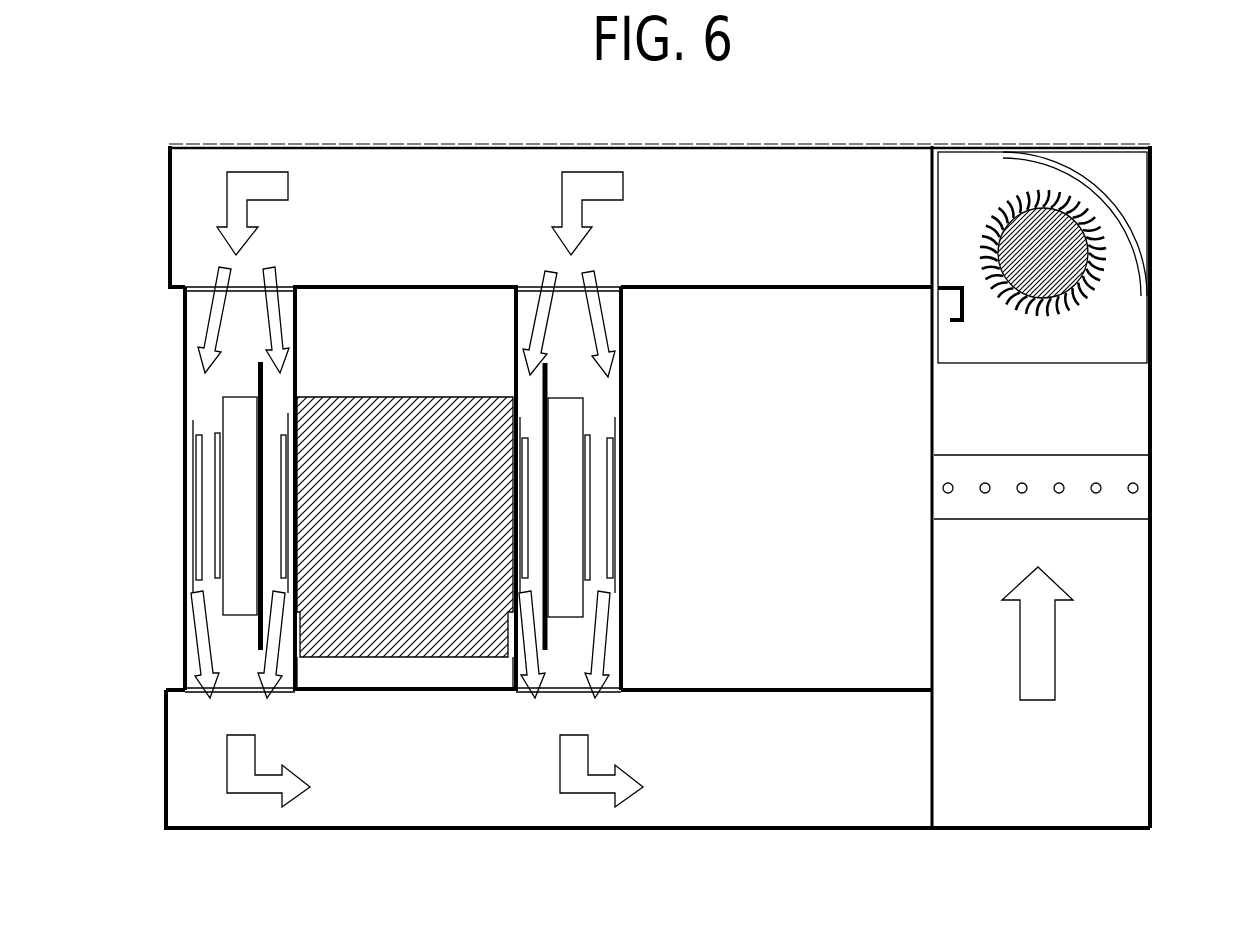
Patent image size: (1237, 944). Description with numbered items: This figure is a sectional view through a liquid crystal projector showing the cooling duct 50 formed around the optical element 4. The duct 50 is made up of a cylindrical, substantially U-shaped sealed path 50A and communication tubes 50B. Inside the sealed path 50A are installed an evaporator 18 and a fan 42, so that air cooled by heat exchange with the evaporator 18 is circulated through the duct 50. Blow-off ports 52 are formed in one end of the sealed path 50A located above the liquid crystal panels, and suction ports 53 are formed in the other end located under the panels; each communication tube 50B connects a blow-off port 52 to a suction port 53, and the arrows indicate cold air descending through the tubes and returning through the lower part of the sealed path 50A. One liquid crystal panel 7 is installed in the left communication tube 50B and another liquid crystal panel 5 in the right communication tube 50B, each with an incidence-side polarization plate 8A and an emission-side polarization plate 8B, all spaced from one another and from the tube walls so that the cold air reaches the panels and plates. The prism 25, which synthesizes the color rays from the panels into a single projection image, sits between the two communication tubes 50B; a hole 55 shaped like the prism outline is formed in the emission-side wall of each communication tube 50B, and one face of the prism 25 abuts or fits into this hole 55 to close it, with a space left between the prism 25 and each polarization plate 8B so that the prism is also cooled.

The optical element 4 is at (176, 630).
The liquid crystal panel 5 is at (567, 487).
The liquid crystal panel 7 is at (235, 425).
The polarization plate 8A is at (196, 538).
The polarization plate 8B is at (283, 477).
The evaporator 18 is at (1138, 488).
The prism 25 is at (405, 640).
The fan 42 is at (1053, 275).
The duct 50 is at (1163, 602).
The sealed path 50A is at (776, 830).
The communication tube 50B is at (185, 370).
The blow-off port 52 is at (200, 290).
The suction port 53 is at (237, 690).
The hole 55 is at (296, 668).